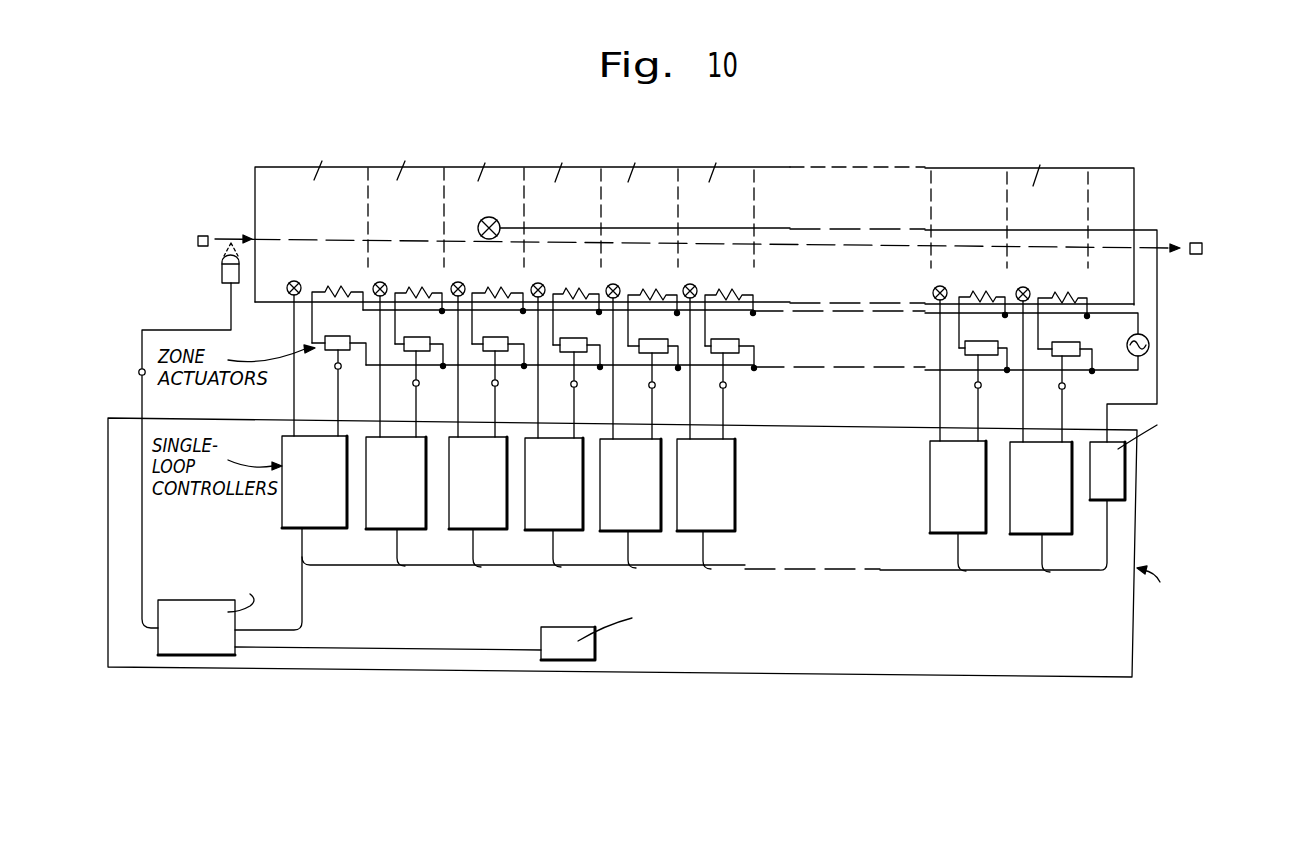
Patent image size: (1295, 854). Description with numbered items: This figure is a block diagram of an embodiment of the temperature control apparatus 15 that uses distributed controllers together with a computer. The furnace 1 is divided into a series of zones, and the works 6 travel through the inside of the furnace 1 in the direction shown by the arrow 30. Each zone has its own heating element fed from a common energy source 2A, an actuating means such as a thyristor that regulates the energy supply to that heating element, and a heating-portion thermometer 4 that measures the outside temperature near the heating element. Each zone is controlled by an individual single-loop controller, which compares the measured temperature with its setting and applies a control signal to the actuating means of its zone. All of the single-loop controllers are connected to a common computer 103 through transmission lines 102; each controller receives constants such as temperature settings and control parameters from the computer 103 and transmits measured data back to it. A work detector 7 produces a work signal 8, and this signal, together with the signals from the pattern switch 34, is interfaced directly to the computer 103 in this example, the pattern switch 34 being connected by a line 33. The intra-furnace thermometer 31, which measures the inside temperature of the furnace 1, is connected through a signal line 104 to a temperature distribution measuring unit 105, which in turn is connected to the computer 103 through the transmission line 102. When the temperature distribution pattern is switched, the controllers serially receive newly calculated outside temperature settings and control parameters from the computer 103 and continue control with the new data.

The furnace 1 is at (1117, 192).
The energy source 2A is at (1149, 348).
The heating-portion thermometer 4 is at (287, 293).
The work 6 is at (197, 237).
The work detector 7 is at (220, 266).
The work signal 8 is at (139, 370).
The temperature control apparatus 15 is at (1138, 505).
The arrow 30 is at (258, 240).
The intra-furnace thermometer 31 is at (487, 218).
The signal line 33 is at (436, 652).
The pattern switch 34 is at (570, 661).
The transmission line 102 is at (305, 610).
The computer 103 is at (220, 649).
The signal line 104 is at (1158, 289).
The temperature distribution measuring unit 105 is at (1126, 463).